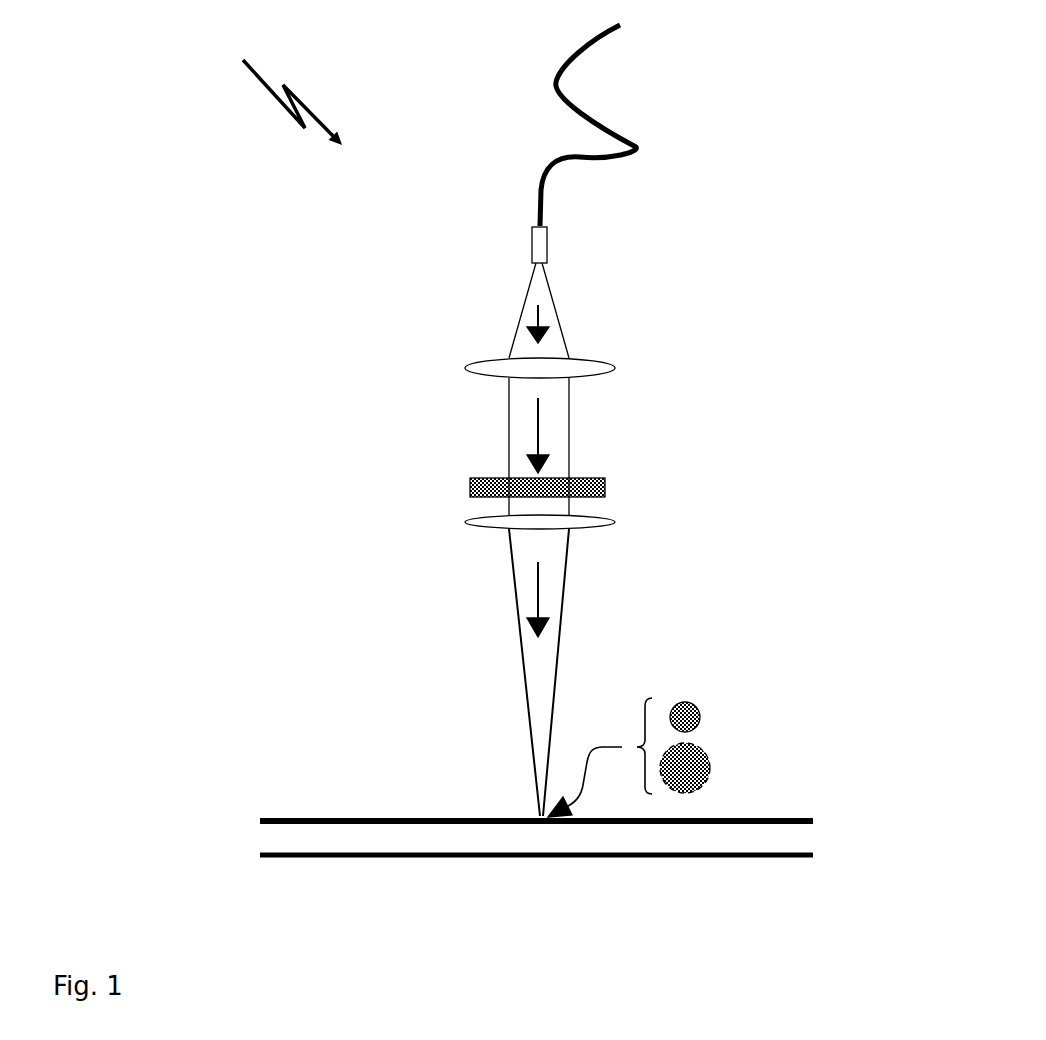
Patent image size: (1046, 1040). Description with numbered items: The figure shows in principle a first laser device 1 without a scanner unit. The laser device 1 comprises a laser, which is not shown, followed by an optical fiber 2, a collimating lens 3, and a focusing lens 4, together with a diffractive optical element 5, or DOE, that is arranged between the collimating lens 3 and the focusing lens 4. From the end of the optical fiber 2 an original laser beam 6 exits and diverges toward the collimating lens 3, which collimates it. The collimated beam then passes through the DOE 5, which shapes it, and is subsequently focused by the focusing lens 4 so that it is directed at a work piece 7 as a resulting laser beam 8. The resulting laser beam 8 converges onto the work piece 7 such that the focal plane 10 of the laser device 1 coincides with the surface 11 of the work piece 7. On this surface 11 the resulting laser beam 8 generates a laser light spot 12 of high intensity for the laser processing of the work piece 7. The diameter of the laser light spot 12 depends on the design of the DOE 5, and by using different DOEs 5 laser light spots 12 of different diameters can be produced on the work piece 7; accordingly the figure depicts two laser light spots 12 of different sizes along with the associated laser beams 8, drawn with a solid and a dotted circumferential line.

The laser device 1 is at (272, 83).
The optical fiber 2 is at (610, 125).
The collimating lens 3 is at (517, 370).
The focusing lens 4 is at (520, 522).
The diffractive optical element 5 is at (585, 490).
The original laser beam 6 is at (613, 280).
The work piece 7 is at (477, 833).
The resulting laser beam 8 is at (541, 650).
The focal plane 10 is at (290, 818).
The surface 11 is at (612, 822).
The laser light spot 12 is at (685, 768).